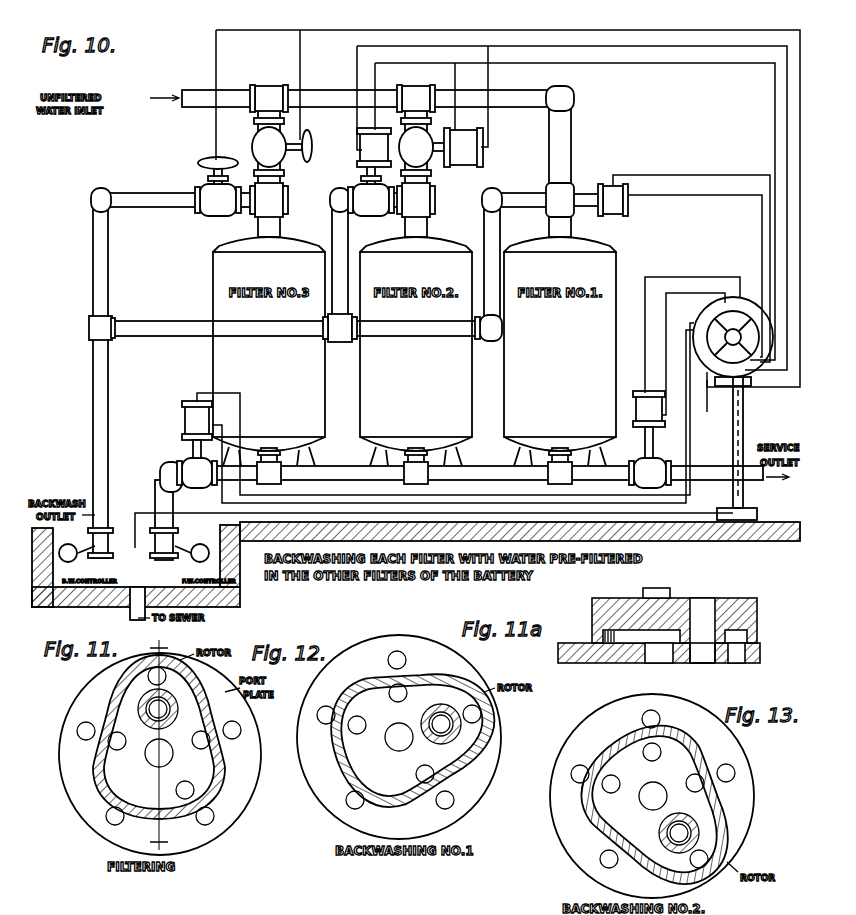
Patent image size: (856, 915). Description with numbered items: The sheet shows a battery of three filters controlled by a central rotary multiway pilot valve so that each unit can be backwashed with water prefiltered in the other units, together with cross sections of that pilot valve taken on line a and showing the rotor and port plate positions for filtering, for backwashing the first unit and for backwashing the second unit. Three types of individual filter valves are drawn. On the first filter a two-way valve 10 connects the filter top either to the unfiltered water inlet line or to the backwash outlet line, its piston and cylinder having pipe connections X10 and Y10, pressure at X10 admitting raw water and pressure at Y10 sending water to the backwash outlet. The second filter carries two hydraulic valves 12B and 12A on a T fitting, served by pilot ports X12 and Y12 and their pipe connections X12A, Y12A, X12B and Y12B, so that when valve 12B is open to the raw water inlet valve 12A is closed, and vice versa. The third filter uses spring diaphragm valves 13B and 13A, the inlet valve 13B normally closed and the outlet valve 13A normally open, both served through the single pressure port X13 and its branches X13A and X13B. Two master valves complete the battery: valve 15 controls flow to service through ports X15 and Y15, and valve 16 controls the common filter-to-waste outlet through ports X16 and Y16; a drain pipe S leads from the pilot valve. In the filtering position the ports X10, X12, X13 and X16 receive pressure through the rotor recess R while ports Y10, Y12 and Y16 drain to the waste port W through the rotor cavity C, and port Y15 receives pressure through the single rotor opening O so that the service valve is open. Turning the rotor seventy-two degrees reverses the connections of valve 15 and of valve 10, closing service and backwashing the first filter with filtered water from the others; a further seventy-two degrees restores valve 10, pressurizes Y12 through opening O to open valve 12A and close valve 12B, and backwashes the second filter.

In FIG. 10, the two-way valve 10 is at (587, 200).
In FIG. 10, the spring diaphragm valve 13A is at (218, 186).
In FIG. 10, the spring diaphragm valve 13B is at (282, 147).
In FIG. 10, the hydraulic valve 12A is at (371, 172).
In FIG. 10, the hydraulic valve 12B is at (441, 147).
In FIG. 10, the master service valve 15 is at (650, 439).
In FIG. 10, the filter-to-waste outlet master valve 16 is at (197, 444).
In FIG. 10, the pipe connection X10 is at (686, 198).
In FIG. 11, the pipe connection X10 is at (232, 730).
In FIG. 12, the pipe connection X10 is at (472, 714).
In FIG. 13, the pipe connection X10 is at (726, 773).
In FIG. 10, the pipe connection Y10 is at (672, 176).
In FIG. 11, the pipe connection Y10 is at (201, 740).
In FIG. 12, the pipe connection Y10 is at (441, 724).
In FIG. 13, the pipe connection Y10 is at (695, 783).
In FIG. 10, the port X12 is at (775, 128).
In FIG. 11, the port X12 is at (205, 816).
In FIG. 12, the port X12 is at (445, 800).
In FIG. 13, the port X12 is at (699, 859).
In FIG. 10, the port Y12 is at (787, 91).
In FIG. 11, the port Y12 is at (185, 790).
In FIG. 12, the port Y12 is at (425, 774).
In FIG. 13, the port Y12 is at (679, 833).
In FIG. 10, the pressure pipe X to valve 12A X12A is at (391, 97).
In FIG. 10, the pressure pipe Y to valve 12A Y12A is at (357, 112).
In FIG. 10, the pressure pipe X to valve 12B X12B is at (471, 98).
In FIG. 10, the pressure pipe Y to valve 12B Y12B is at (489, 122).
In FIG. 10, the port X13 is at (800, 71).
In FIG. 11, the port X13 is at (115, 816).
In FIG. 12, the port X13 is at (355, 800).
In FIG. 13, the port X13 is at (609, 859).
In FIG. 10, the pressure pipe X to valve 13A X13A is at (217, 52).
In FIG. 10, the pressure pipe X to valve 13B X13B is at (300, 62).
In FIG. 10, the port X15 is at (676, 280).
In FIG. 11, the port X15 is at (157, 676).
In FIG. 12, the port X15 is at (397, 660).
In FIG. 11A, the port X15 is at (738, 664).
In FIG. 13, the port X15 is at (651, 719).
In FIG. 10, the port Y15 is at (668, 302).
In FIG. 11, the port Y15 is at (158, 709).
In FIG. 12, the port Y15 is at (398, 693).
In FIG. 11A, the port Y15 is at (700, 664).
In FIG. 13, the port Y15 is at (652, 752).
In FIG. 10, the port X16 is at (193, 392).
In FIG. 11, the port X16 is at (86, 731).
In FIG. 12, the port X16 is at (326, 715).
In FIG. 13, the port X16 is at (580, 774).
In FIG. 10, the port Y16 is at (240, 428).
In FIG. 11, the port Y16 is at (117, 741).
In FIG. 12, the port Y16 is at (357, 725).
In FIG. 13, the port Y16 is at (611, 784).
In FIG. 10, the waste port W is at (752, 417).
In FIG. 11, the waste port W is at (159, 753).
In FIG. 12, the waste port W is at (399, 737).
In FIG. 11A, the waste port W is at (659, 653).
In FIG. 13, the waste port W is at (653, 796).
In FIG. 10, the drain pipe from controller S is at (703, 409).
In FIG. 11, the single opening O is at (159, 753).
In FIG. 12, the single opening O is at (399, 737).
In FIG. 11A, the single opening O is at (702, 630).
In FIG. 13, the single opening O is at (684, 822).
In FIG. 11, the cavity C is at (159, 753).
In FIG. 12, the cavity C is at (399, 737).
In FIG. 11A, the cavity C is at (675, 637).
In FIG. 13, the cavity C is at (653, 796).
In FIG. 11, the rotor recess R is at (159, 749).
In FIG. 12, the rotor recess R is at (414, 732).
In FIG. 13, the rotor recess R is at (662, 809).
In FIG. 11, the section line a is at (159, 746).